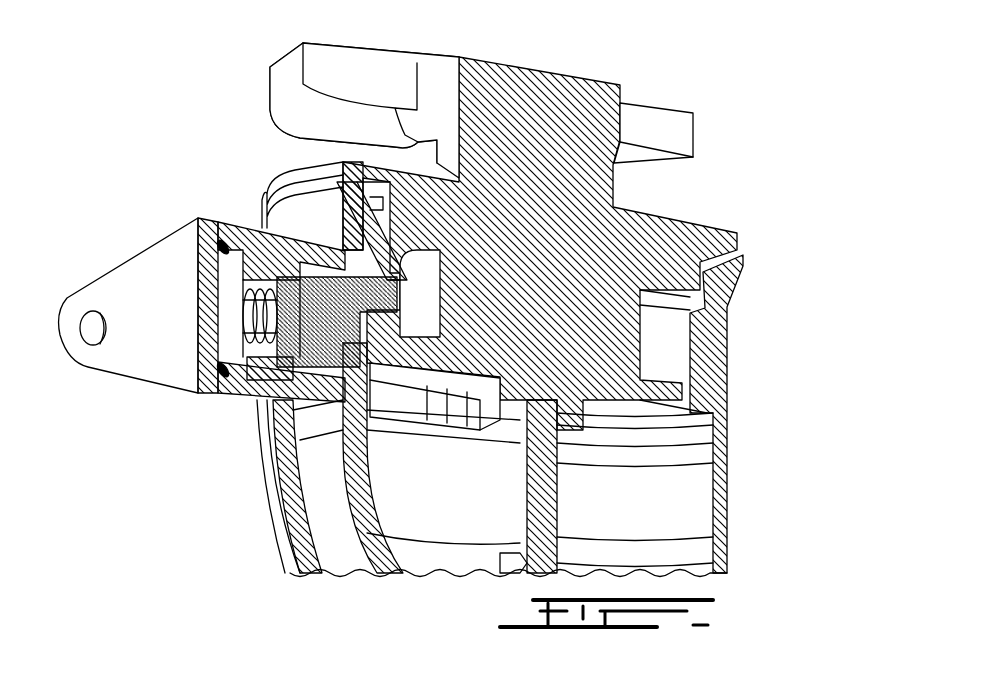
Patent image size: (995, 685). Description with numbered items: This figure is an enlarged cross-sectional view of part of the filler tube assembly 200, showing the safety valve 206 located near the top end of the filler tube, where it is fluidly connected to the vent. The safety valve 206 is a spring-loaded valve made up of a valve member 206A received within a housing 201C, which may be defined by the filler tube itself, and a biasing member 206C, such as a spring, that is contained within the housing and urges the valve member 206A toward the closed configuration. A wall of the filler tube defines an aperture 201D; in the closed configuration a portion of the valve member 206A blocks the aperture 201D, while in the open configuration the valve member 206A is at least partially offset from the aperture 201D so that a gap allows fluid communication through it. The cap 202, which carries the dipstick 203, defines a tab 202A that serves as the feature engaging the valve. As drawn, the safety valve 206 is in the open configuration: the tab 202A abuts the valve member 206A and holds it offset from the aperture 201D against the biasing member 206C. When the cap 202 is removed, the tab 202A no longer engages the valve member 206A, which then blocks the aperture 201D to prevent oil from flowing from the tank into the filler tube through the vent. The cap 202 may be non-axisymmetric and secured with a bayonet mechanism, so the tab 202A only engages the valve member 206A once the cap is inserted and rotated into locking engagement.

The filler tube assembly 200 is at (763, 196).
The cap 202 is at (542, 135).
The tab 202A is at (418, 347).
The housing 201C is at (243, 405).
The aperture 201D is at (370, 305).
The dipstick 203 is at (548, 500).
The safety valve 206 is at (177, 207).
The valve member 206A is at (265, 228).
The biasing member 206C is at (245, 327).